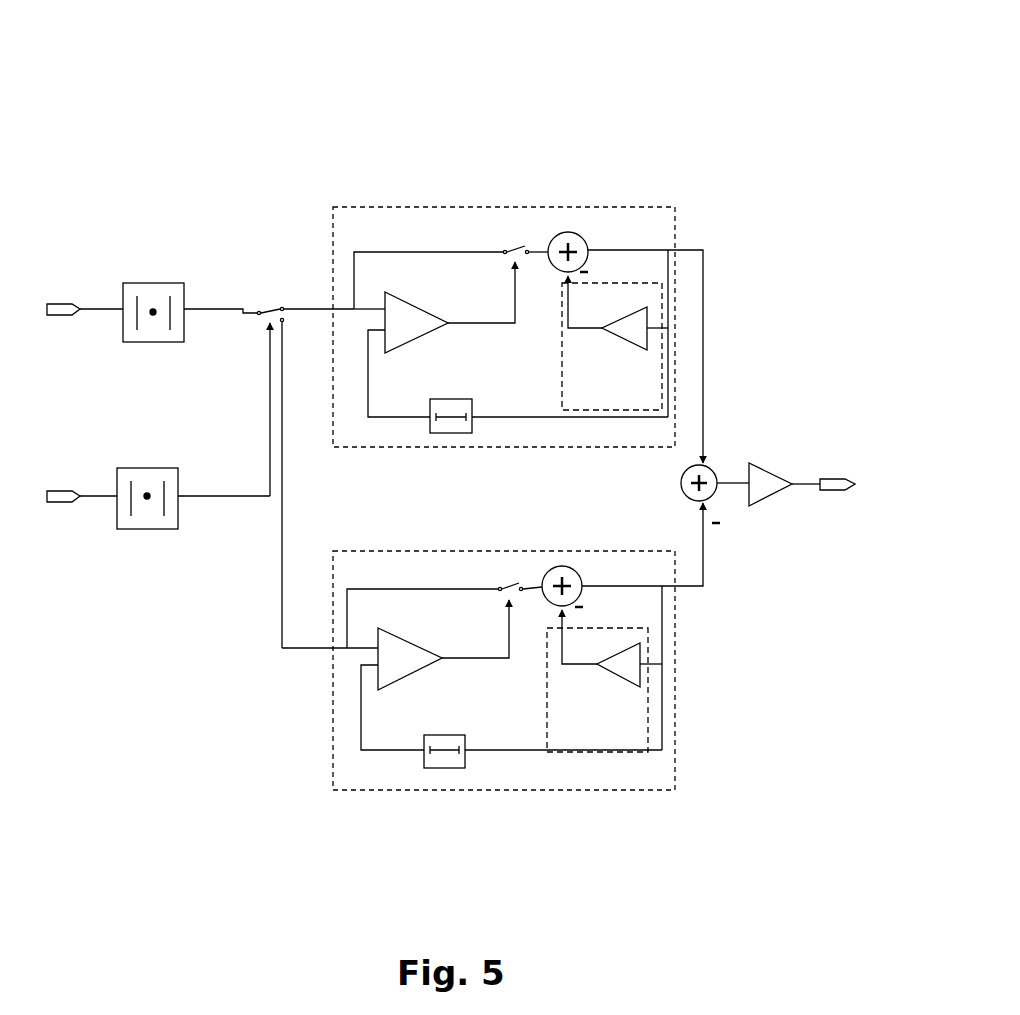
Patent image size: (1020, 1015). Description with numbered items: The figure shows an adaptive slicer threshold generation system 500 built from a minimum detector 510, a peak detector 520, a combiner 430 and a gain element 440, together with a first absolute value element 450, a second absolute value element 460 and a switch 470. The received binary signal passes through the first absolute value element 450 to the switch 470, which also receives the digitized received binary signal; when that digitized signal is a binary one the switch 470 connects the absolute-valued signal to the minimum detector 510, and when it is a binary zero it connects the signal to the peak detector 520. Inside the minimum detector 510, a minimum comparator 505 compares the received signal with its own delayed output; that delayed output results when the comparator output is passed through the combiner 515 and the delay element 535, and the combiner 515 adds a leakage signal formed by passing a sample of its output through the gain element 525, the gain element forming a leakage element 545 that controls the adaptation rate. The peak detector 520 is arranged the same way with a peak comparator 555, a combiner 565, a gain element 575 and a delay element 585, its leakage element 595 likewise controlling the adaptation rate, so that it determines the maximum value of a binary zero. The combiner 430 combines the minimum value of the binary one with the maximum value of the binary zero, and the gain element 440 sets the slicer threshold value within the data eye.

The adaptive slicer threshold generation system 500 is at (453, 436).
The first absolute value element 450 is at (142, 281).
The second absolute value element 460 is at (142, 532).
The switch 470 is at (241, 323).
The minimum detector 510 is at (623, 205).
The peak detector 520 is at (622, 794).
The minimum comparator 505 is at (409, 290).
The delay element 535 is at (459, 397).
The combiner 515 is at (546, 277).
The gain element 525 is at (624, 354).
The leakage element 545 is at (559, 389).
The peak comparator 555 is at (409, 626).
The delay element 585 is at (458, 733).
The combiner 565 is at (546, 610).
The gain element 575 is at (623, 691).
The leakage element 595 is at (544, 730).
The combiner 430 is at (716, 468).
The gain element 440 is at (776, 502).